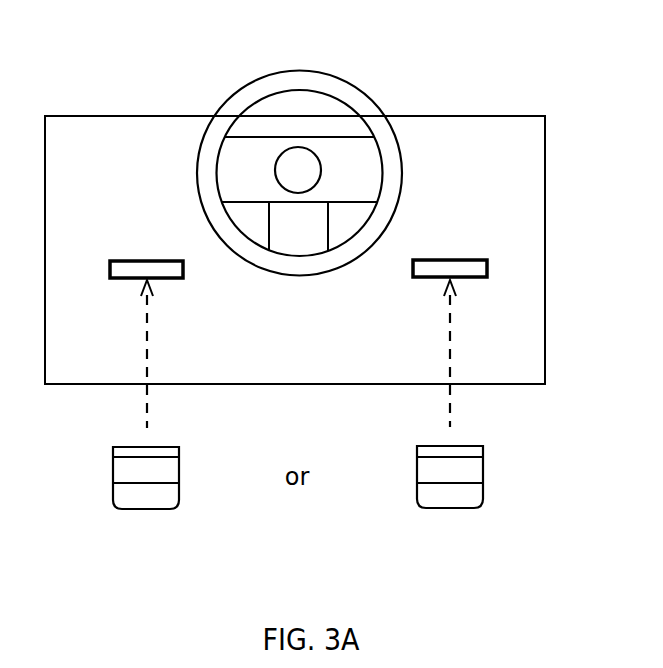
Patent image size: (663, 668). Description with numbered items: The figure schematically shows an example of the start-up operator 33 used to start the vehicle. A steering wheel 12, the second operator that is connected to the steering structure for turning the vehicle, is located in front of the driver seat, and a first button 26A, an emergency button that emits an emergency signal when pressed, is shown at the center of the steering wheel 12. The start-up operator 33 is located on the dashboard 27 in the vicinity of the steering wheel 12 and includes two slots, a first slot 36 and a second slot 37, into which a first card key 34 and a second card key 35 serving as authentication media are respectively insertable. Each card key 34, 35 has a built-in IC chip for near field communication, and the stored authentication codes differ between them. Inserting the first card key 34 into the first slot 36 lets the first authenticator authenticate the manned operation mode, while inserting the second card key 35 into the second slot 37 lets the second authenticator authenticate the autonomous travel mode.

The steering wheel 12 is at (332, 80).
The dashboard 27 is at (108, 125).
The first button 26A is at (308, 168).
The first slot 36 is at (148, 260).
The second slot 37 is at (450, 258).
The start-up operator 33 is at (520, 268).
The first card key 34 is at (148, 510).
The second card key 35 is at (452, 510).